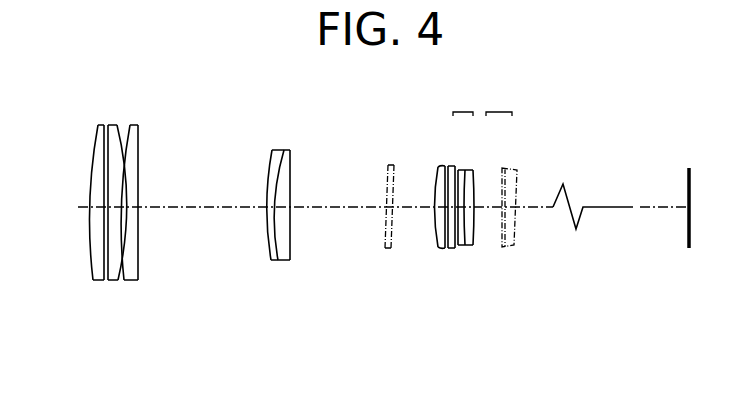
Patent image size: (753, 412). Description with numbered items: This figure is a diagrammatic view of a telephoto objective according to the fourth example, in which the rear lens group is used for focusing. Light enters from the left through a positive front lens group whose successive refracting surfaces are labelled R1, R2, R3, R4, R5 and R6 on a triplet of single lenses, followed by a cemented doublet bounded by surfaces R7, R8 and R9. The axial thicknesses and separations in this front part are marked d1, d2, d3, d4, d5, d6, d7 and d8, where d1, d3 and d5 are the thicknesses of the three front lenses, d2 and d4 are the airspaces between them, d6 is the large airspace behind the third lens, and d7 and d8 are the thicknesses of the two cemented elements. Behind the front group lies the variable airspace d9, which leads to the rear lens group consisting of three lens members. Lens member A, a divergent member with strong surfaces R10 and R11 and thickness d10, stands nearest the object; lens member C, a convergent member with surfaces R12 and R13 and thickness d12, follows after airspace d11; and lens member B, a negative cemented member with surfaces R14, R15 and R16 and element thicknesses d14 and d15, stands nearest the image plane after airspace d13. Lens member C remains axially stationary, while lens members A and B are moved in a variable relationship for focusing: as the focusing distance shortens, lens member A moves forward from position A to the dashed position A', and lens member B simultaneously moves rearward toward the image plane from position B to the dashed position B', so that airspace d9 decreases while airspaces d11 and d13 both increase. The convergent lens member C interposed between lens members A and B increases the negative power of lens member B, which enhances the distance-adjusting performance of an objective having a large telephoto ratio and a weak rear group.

The thickness of first lens d1 is at (100, 200).
The airspace between first and second lenses d2 is at (106, 195).
The thickness of second lens d3 is at (112, 210).
The airspace between second and third lenses d4 is at (120, 195).
The thickness of third lens d5 is at (125, 204).
The airspace behind third lens d6 is at (201, 191).
The thickness of fourth lens d7 is at (269, 207).
The thickness of fifth lens d8 is at (284, 185).
The variable airspace in front of lens member A d9 is at (346, 193).
The thickness of lens member A d10 is at (441, 202).
The variable airspace between lens members A and C d11 is at (448, 195).
The thickness of lens member C d12 is at (449, 210).
The variable airspace between lens members C and B d13 is at (451, 172).
The thickness of first element of lens member B d14 is at (457, 168).
The thickness of second element of lens member B d15 is at (476, 180).
The first refracting surface R1 is at (93, 281).
The second refracting surface R2 is at (103, 281).
The third refracting surface R3 is at (109, 281).
The fourth refracting surface R4 is at (118, 281).
The fifth refracting surface R5 is at (126, 281).
The sixth refracting surface R6 is at (139, 281).
The seventh refracting surface R7 is at (269, 262).
The eighth refracting surface R8 is at (278, 262).
The ninth refracting surface R9 is at (291, 262).
The tenth refracting surface R10 is at (437, 249).
The eleventh refracting surface R11 is at (444, 249).
The twelfth refracting surface R12 is at (449, 249).
The thirteenth refracting surface R13 is at (455, 249).
The fourteenth refracting surface R14 is at (460, 249).
The fifteenth refracting surface R15 is at (469, 249).
The sixteenth refracting surface R16 is at (475, 249).
The lens member A is at (422, 124).
The near-focus position of lens member A A' is at (389, 166).
The lens member B is at (463, 100).
The near-focus position of lens member B B' is at (501, 165).
The lens member C is at (450, 165).